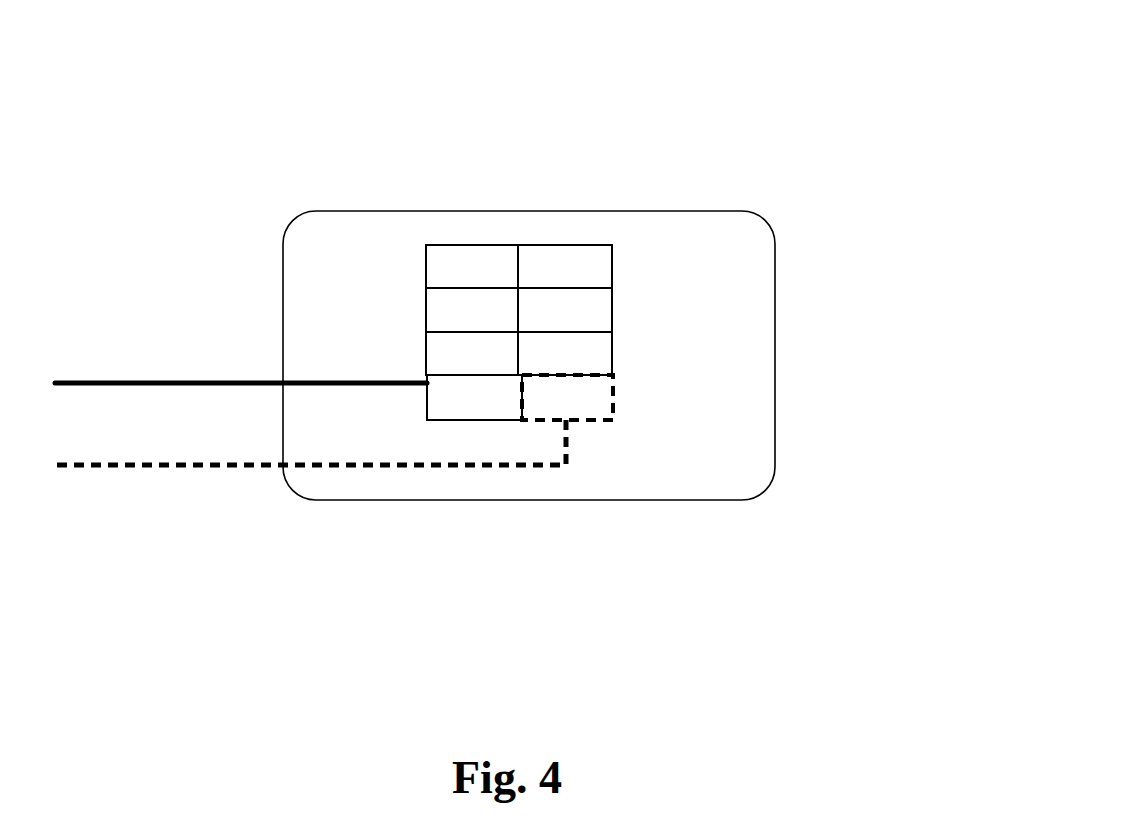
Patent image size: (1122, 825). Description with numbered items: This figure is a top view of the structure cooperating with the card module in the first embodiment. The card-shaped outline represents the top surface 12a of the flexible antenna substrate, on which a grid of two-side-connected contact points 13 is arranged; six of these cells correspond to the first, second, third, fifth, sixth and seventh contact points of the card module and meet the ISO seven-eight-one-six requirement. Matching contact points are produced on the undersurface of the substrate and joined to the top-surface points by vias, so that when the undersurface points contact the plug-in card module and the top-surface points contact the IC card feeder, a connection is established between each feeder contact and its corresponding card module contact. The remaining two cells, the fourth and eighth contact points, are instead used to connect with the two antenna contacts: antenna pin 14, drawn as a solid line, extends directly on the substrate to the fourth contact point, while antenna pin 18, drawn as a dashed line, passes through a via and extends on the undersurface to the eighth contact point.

The top surface of the antenna substrate 12a is at (693, 305).
The memory cells table 13 is at (606, 243).
The antenna pin 14 is at (202, 382).
The antenna pin 18 is at (205, 467).